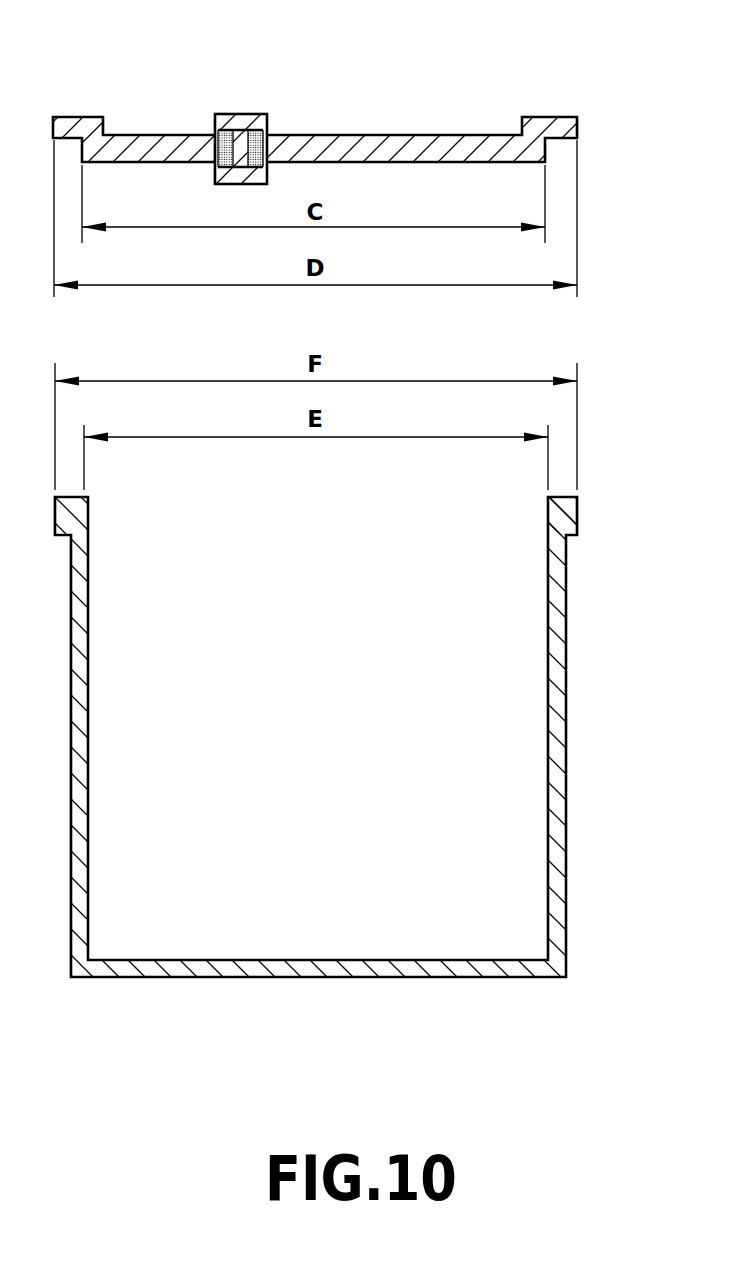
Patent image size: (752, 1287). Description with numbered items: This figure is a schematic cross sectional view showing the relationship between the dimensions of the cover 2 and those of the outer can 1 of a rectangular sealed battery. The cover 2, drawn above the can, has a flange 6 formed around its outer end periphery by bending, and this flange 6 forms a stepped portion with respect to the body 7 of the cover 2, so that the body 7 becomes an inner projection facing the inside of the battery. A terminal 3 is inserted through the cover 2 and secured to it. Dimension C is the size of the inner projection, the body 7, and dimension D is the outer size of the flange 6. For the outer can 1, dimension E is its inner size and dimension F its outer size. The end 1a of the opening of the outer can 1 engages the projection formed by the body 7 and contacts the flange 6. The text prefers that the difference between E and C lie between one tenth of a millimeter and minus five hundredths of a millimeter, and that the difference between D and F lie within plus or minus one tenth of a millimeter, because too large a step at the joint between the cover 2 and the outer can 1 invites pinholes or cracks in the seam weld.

The outer can 1 is at (357, 726).
The end of the opening of the outer can 1a is at (577, 513).
The cover 2 is at (315, 103).
The terminal 3 is at (240, 117).
The flange 6 is at (78, 117).
The body 7 is at (413, 135).